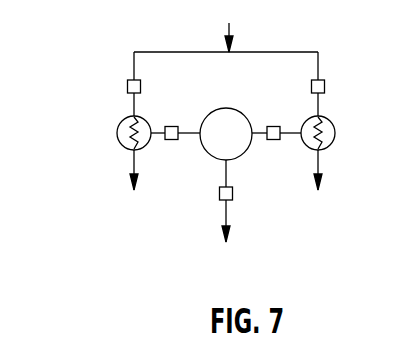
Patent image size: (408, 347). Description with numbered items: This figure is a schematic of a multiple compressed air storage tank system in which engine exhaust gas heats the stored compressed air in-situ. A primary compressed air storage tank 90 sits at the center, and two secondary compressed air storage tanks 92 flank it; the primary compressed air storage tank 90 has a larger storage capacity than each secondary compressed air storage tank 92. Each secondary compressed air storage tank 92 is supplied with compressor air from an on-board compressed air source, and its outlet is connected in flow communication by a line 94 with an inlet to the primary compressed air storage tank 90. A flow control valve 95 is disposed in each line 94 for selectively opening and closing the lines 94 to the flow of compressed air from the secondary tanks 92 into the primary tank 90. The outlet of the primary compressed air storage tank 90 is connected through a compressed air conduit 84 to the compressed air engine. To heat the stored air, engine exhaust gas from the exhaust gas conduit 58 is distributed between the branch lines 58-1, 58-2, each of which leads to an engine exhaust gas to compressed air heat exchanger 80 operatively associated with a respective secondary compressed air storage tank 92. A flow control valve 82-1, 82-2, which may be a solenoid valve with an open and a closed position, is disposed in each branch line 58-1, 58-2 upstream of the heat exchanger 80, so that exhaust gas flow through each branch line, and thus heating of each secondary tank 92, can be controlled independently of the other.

The exhaust gas conduit 58 is at (229, 30).
The branch line 58-1 is at (134, 61).
The branch line 58-2 is at (318, 60).
The flow control valve 82-1 is at (141, 87).
The flow control valve 82-2 is at (325, 87).
The compressed air heat exchanger 80 is at (129, 139).
The secondary compressed air storage tank 92 is at (121, 127).
The line 94 is at (186, 134).
The flow control valve 95 is at (170, 140).
The primary compressed air storage tank 90 is at (227, 108).
The compressed air conduit 84 is at (228, 212).